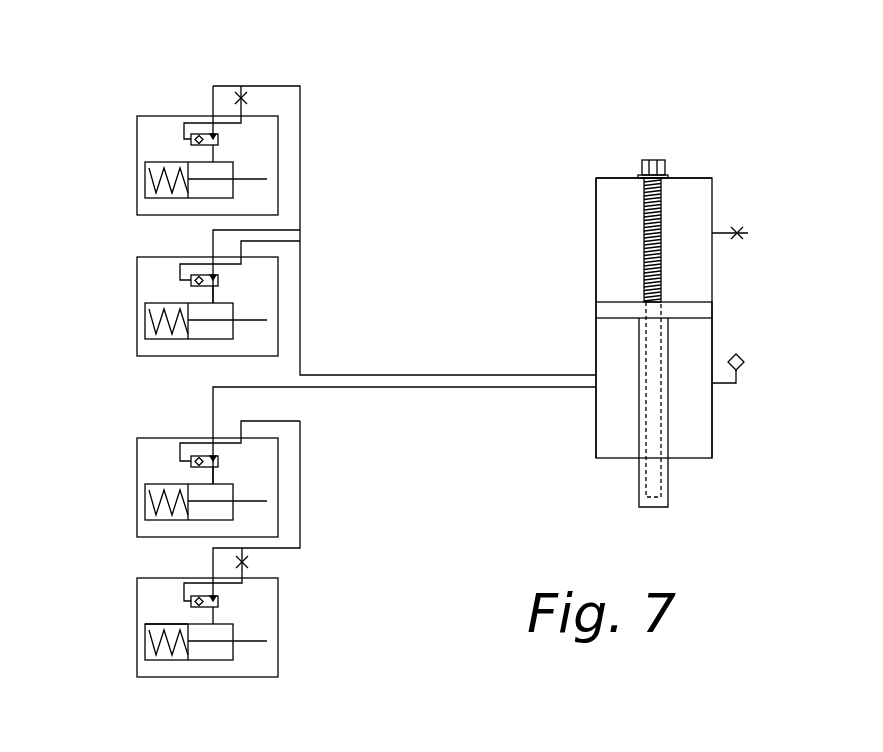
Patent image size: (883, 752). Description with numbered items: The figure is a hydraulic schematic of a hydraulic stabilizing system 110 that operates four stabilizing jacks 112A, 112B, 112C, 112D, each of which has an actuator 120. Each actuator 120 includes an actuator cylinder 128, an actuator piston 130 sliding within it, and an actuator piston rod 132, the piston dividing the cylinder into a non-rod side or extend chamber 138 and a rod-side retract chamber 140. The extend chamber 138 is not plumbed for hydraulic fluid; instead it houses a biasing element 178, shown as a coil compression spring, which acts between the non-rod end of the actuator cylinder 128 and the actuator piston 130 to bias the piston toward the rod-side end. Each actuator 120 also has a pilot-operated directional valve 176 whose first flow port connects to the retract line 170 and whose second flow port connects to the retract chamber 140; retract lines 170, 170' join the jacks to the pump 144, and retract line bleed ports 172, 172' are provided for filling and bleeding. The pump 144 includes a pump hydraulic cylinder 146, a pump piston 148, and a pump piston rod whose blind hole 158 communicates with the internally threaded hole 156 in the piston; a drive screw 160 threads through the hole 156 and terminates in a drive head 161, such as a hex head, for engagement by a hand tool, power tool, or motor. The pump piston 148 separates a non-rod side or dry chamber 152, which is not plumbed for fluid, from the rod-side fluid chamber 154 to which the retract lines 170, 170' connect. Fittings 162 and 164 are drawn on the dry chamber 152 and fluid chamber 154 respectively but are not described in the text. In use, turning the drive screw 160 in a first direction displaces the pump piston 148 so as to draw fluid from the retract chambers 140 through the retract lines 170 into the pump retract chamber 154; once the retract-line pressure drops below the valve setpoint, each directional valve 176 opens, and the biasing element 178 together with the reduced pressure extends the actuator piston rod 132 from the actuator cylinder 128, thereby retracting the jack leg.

The hydraulic stabilizing system 110 is at (731, 598).
The first stabilizing jack 112A is at (278, 164).
The second stabilizing jack 112B is at (278, 290).
The third stabilizing jack 112C is at (278, 480).
The fourth stabilizing jack 112D is at (278, 626).
The actuator 120 is at (182, 663).
The actuator cylinder 128 is at (158, 162).
The actuator piston 130 is at (188, 162).
The actuator piston rod 132 is at (258, 178).
The actuator extend chamber 138 is at (158, 192).
The actuator retract chamber 140 is at (225, 190).
The fluid transfer pump 144 is at (712, 192).
The pump hydraulic cylinder 146 is at (622, 178).
The pump piston 148 is at (700, 311).
The pump dry chamber 152 is at (617, 230).
The pump retract chamber 154 is at (692, 422).
The threaded hole 156 is at (655, 311).
The blind hole 158 is at (652, 473).
The drive screw 160 is at (662, 208).
The drive head 161 is at (656, 160).
The bleed valve 162 is at (748, 233).
The check valve 164 is at (745, 361).
The retract line 170 is at (404, 230).
The retract line 170' is at (404, 435).
The retract line bleed port 172 is at (242, 90).
The retract line bleed port 172' is at (285, 574).
The pilot-operated directional valve 176 is at (195, 136).
The biasing element 178 is at (160, 632).